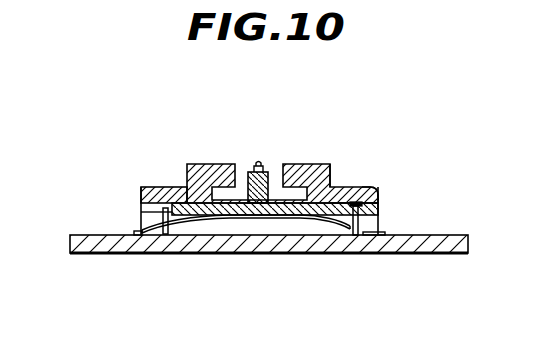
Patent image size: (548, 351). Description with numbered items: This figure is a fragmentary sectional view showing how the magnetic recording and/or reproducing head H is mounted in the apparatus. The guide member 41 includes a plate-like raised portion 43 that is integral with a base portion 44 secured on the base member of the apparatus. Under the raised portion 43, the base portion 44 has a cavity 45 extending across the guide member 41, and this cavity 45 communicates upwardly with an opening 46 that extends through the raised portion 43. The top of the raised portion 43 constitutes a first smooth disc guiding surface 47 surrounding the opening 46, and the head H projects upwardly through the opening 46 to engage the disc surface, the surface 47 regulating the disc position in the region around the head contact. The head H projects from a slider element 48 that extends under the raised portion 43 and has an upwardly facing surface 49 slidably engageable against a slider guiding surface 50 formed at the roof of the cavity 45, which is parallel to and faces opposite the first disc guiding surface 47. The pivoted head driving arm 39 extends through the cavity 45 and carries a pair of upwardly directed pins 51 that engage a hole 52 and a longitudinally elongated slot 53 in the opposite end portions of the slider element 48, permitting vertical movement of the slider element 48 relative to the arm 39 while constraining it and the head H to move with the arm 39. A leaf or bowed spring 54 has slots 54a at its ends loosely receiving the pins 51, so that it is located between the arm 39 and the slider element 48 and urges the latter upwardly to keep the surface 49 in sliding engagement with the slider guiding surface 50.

The head driving arm 39 is at (444, 237).
The guide member 41 is at (313, 161).
The raised portion 43 is at (331, 187).
The base portion 44 is at (359, 190).
The cavity 45 is at (142, 223).
The opening 46 is at (245, 172).
The first disc guiding surface 47 is at (300, 163).
The slider element 48 is at (342, 200).
The upwardly facing surface 49 is at (182, 200).
The slider guiding surface 50 is at (142, 205).
The pins 51 is at (172, 231).
The hole 52 is at (380, 191).
The longitudinally elongated slot 53 is at (152, 233).
The bowed spring 54 is at (273, 220).
The slots 54a is at (160, 237).
The magnetic recording and/or reproducing head H is at (260, 161).